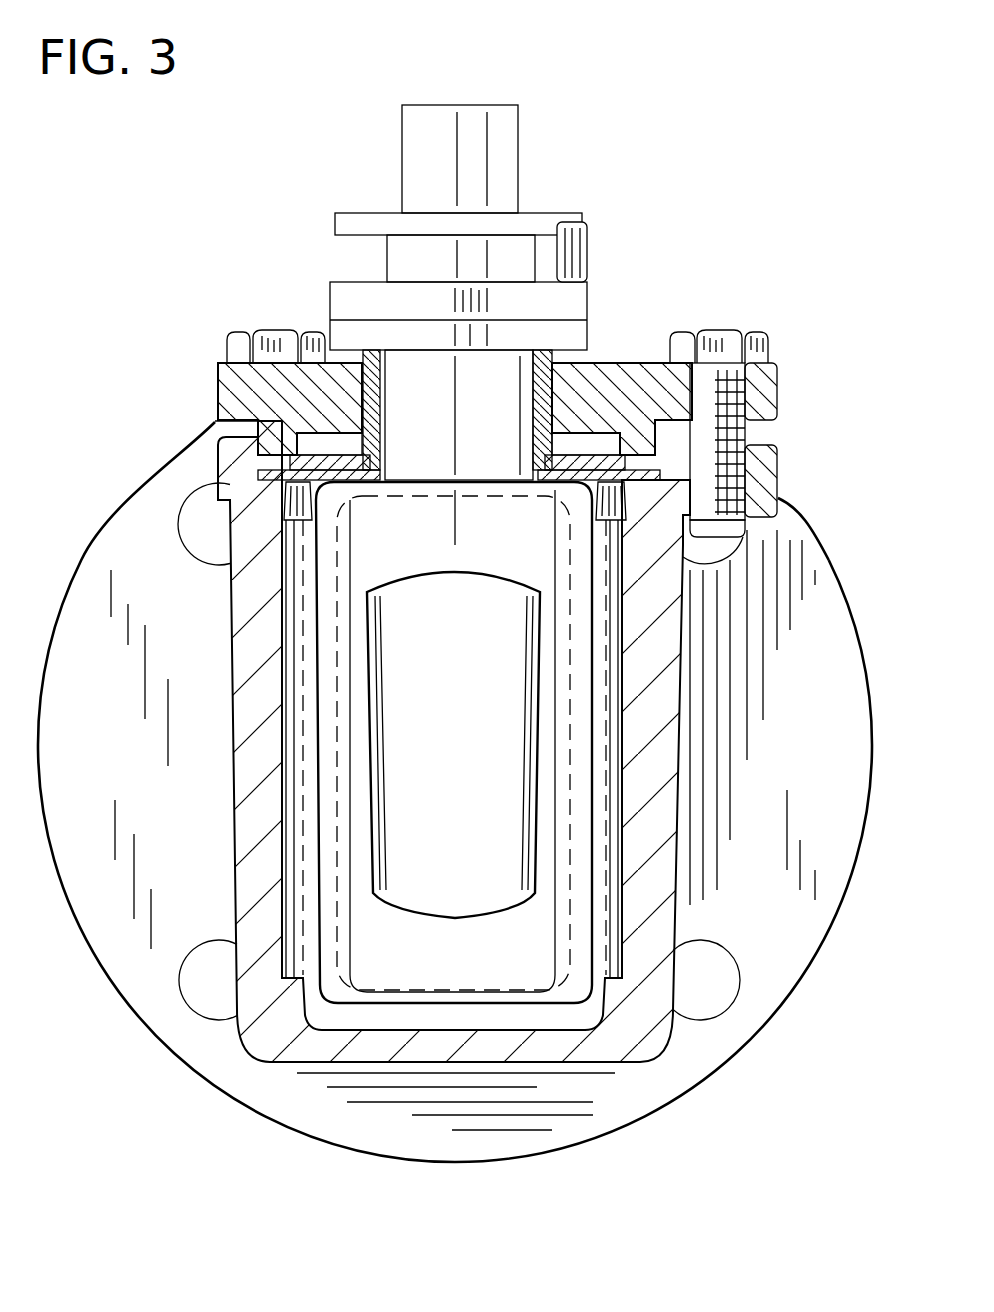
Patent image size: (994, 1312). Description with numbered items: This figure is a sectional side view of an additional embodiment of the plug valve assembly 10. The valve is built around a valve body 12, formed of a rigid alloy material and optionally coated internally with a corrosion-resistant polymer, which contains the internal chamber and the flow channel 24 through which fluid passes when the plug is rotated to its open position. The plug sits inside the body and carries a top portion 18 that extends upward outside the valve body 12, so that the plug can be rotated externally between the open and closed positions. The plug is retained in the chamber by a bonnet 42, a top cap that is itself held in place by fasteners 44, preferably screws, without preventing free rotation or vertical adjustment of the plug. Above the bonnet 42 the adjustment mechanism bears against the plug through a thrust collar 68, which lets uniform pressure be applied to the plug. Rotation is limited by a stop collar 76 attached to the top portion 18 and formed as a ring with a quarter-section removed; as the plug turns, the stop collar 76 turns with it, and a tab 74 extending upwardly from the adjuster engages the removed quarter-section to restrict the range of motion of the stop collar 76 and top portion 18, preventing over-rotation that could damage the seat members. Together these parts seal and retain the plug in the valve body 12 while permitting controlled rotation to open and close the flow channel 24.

The plug valve assembly 10 is at (648, 132).
The valve body 12 is at (680, 765).
The top portion 18 is at (478, 100).
The flow channel 24 is at (467, 757).
The bonnet 42 is at (218, 392).
The fasteners 44 is at (263, 330).
The thrust collar 68 is at (350, 394).
The tab 74 is at (590, 230).
The stop collar 76 is at (357, 306).